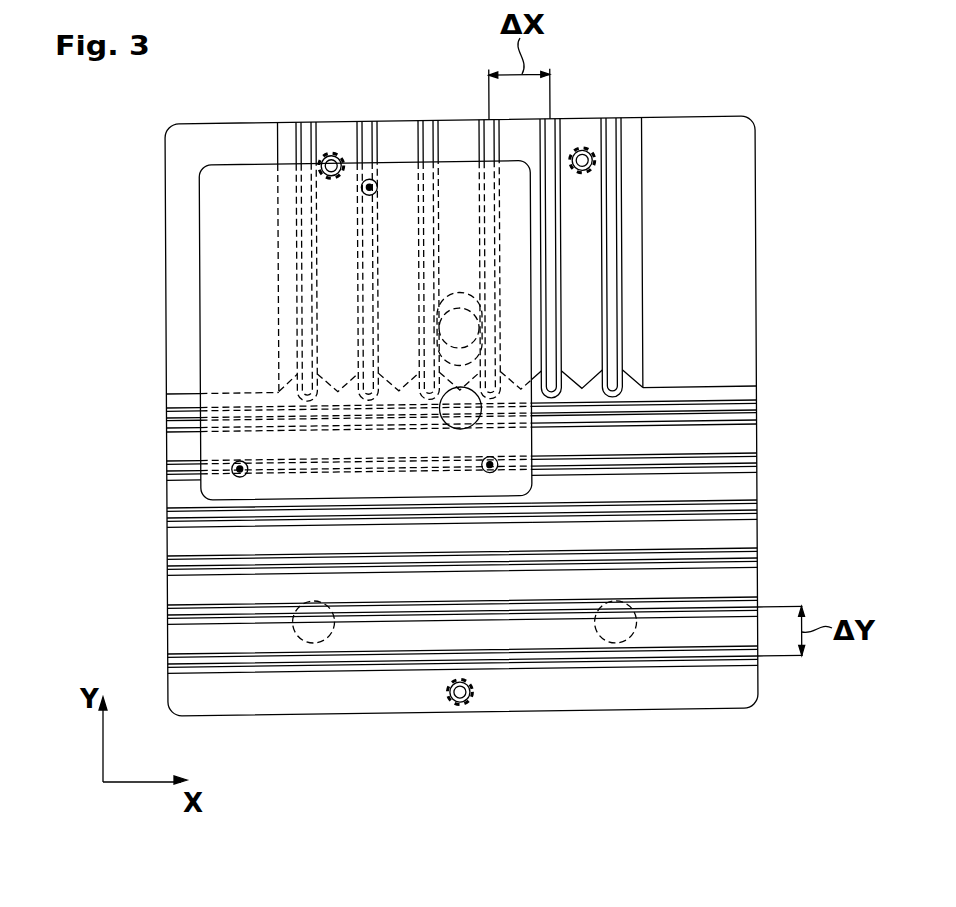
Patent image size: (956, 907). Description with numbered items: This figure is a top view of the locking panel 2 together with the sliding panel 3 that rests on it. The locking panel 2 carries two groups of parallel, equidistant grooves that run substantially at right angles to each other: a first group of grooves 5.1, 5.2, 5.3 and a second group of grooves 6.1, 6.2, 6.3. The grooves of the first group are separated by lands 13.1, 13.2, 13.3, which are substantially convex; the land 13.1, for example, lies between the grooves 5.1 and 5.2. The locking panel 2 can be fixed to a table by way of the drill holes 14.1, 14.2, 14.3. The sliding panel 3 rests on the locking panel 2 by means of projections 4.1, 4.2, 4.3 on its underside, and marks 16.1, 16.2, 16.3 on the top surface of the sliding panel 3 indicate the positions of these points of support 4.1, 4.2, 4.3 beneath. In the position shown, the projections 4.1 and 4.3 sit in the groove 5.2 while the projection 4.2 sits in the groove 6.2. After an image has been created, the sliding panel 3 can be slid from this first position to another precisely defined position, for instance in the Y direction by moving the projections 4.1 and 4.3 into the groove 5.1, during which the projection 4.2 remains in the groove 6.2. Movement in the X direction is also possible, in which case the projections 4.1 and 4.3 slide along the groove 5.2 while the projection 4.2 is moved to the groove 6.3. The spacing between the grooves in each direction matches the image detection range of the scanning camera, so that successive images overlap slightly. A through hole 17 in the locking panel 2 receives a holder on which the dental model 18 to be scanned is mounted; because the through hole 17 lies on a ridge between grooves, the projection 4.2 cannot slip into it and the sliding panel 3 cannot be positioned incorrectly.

The locking panel 2 is at (742, 252).
The sliding panel 3 is at (520, 178).
The projection 4.1 is at (233, 476).
The projection 4.2 is at (362, 191).
The projection 4.3 is at (498, 465).
The groove 5.1 is at (166, 417).
The groove 5.2 is at (166, 469).
The groove 5.3 is at (166, 517).
The groove 6.1 is at (302, 122).
The groove 6.2 is at (364, 121).
The groove 6.3 is at (426, 120).
The land 13.1 is at (758, 446).
The land 13.2 is at (758, 493).
The land 13.3 is at (758, 543).
The drill hole 14.1 is at (458, 710).
The drill hole 14.2 is at (332, 152).
The drill hole 14.3 is at (586, 152).
The mark 16.1 is at (243, 477).
The mark 16.2 is at (366, 186).
The mark 16.3 is at (492, 475).
The through hole 17 is at (472, 370).
The dental model 18 is at (452, 408).